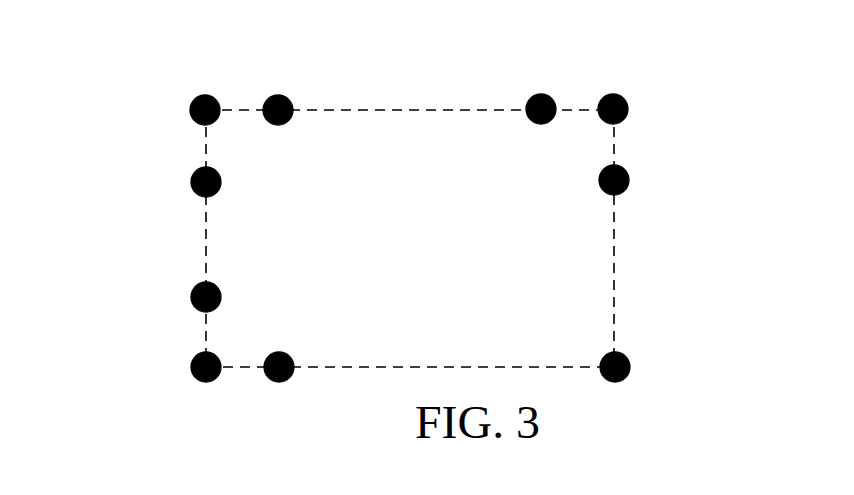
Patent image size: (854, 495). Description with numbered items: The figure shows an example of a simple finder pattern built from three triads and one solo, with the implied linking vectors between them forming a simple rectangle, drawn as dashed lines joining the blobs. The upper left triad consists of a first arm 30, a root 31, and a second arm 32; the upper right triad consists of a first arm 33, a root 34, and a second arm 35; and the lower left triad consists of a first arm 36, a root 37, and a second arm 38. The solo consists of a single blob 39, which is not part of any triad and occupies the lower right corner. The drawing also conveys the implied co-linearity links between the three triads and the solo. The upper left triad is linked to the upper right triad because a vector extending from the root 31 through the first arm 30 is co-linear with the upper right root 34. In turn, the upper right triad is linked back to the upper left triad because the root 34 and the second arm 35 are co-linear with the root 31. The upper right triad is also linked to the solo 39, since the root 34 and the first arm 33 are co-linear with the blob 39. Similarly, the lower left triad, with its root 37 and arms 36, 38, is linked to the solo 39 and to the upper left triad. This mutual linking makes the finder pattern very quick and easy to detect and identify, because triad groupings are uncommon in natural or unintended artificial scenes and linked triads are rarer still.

The first arm 30 is at (291, 106).
The root 31 is at (191, 109).
The second arm 32 is at (191, 183).
The first arm 33 is at (630, 180).
The root 34 is at (629, 109).
The second arm 35 is at (527, 106).
The first arm 36 is at (191, 297).
The root 37 is at (206, 382).
The second arm 38 is at (279, 382).
The blob 39 is at (630, 366).